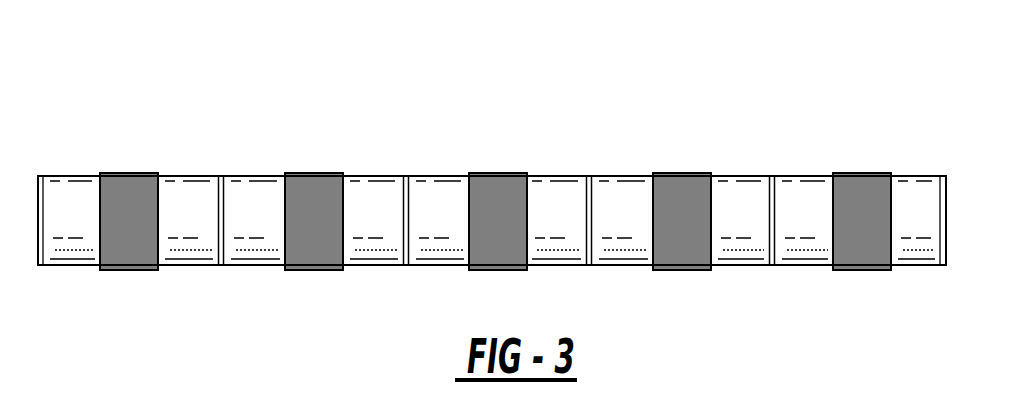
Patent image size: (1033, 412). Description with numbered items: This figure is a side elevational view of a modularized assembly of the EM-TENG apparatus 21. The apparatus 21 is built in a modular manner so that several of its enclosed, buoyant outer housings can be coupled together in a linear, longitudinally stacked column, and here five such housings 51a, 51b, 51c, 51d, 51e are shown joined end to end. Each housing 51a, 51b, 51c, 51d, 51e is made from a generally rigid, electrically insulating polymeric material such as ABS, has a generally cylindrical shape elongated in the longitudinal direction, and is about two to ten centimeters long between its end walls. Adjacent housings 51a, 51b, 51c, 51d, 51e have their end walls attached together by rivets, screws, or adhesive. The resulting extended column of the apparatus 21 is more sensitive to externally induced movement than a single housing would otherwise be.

The EM-TENG apparatus 21 is at (99, 99).
The housing 51a is at (193, 197).
The housing 51b is at (375, 195).
The housing 51c is at (553, 200).
The housing 51d is at (740, 197).
The housing 51e is at (923, 192).